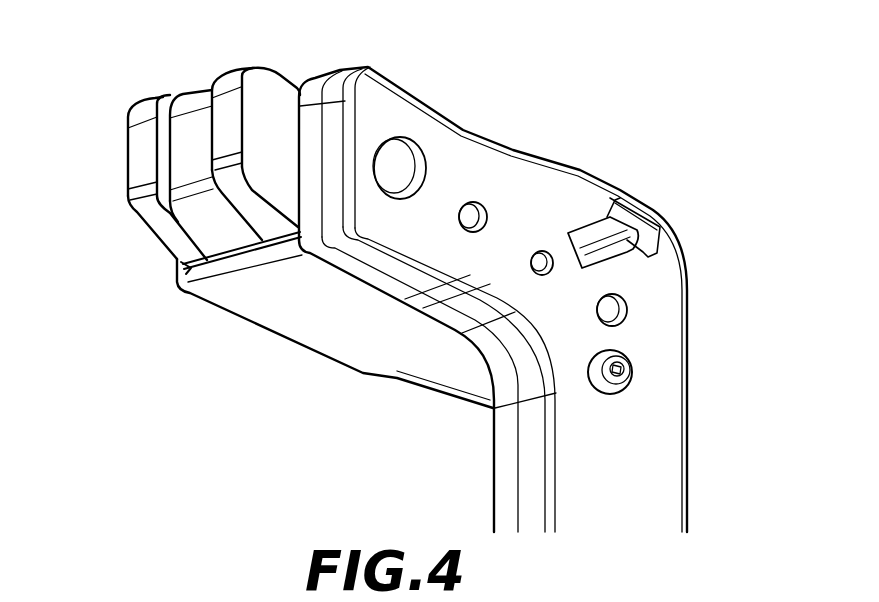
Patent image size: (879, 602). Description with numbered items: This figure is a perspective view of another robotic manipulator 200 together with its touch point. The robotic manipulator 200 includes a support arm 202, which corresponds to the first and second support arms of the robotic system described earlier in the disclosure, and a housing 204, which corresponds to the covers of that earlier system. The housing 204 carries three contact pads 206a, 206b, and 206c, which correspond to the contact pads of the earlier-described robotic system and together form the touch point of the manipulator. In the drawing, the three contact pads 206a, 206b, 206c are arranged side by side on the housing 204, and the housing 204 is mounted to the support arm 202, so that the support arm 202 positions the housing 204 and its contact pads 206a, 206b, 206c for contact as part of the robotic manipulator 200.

The robotic manipulator 200 is at (135, 63).
The support arm 202 is at (667, 414).
The housing 204 is at (248, 302).
The contact pad 206a is at (283, 73).
The contact pad 206b is at (200, 92).
The contact pad 206c is at (128, 118).